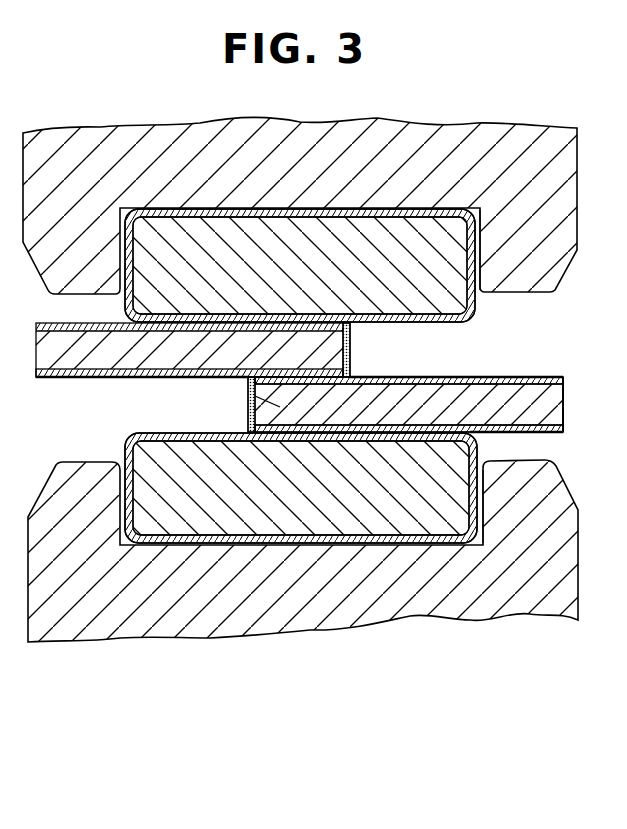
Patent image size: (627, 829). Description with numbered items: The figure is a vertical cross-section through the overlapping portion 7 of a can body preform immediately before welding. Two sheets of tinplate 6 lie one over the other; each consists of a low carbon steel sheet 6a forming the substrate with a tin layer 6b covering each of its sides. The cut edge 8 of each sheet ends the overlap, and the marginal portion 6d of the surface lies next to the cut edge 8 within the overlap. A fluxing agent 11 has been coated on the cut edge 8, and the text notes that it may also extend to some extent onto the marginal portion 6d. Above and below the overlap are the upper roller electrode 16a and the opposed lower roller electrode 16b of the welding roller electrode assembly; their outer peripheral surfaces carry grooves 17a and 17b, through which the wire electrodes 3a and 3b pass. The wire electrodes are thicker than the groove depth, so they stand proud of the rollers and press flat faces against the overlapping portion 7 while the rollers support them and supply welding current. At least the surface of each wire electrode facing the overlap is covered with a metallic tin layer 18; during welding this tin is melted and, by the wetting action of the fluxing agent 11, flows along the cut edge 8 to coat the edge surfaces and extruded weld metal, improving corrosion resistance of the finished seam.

The wire electrode 3a is at (457, 283).
The wire electrode 3b is at (477, 444).
The tinplate 6 is at (415, 407).
The low carbon steel sheet 6a is at (509, 386).
The tin layer 6b is at (68, 378).
The marginal portion 6d is at (380, 410).
The overlapping portion 7 is at (255, 396).
The cut edge 8 is at (351, 347).
The fluxing agent 11 is at (248, 419).
The upper roller electrode 16a is at (556, 135).
The lower roller electrode 16b is at (540, 600).
The groove 17a is at (484, 213).
The groove 17b is at (480, 532).
The metallic tin layer 18 is at (442, 319).